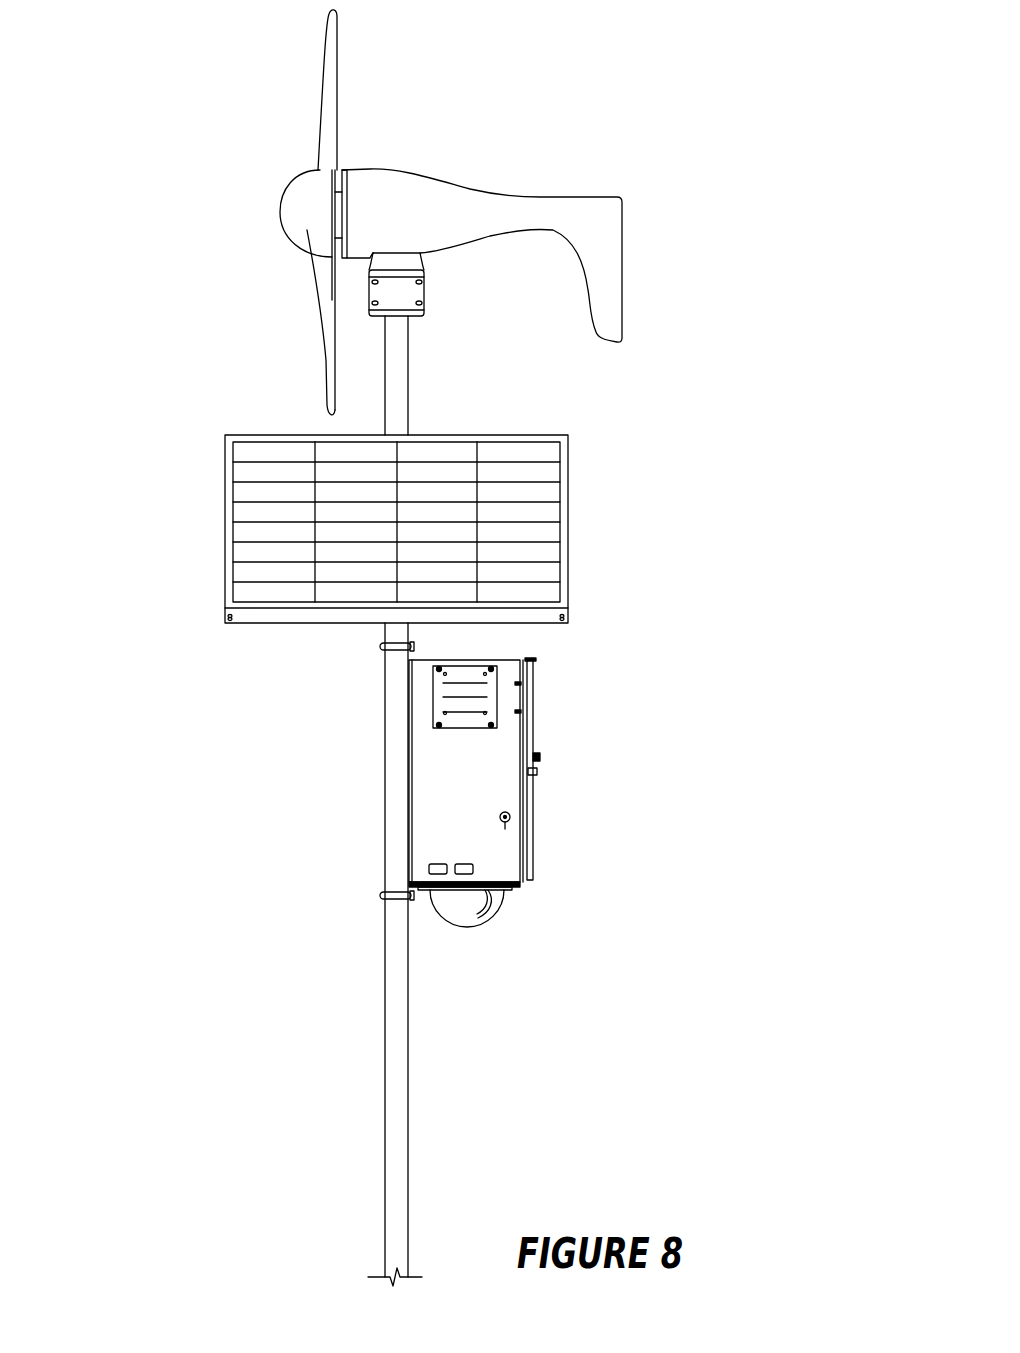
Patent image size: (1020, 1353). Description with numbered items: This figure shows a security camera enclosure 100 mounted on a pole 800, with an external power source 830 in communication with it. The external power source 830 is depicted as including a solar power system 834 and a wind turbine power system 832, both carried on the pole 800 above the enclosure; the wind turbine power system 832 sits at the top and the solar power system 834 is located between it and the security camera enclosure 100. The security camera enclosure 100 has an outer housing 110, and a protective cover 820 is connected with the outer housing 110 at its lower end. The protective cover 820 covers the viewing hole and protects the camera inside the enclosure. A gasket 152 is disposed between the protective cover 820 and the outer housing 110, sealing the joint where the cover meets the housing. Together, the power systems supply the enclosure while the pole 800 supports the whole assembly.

The external power source 830 is at (153, 66).
The wind turbine power system 832 is at (453, 190).
The solar power system 834 is at (568, 435).
The security camera enclosure 100 is at (552, 665).
The outer housing 110 is at (418, 789).
The gasket 152 is at (517, 886).
The protective cover 820 is at (492, 917).
The pole 800 is at (408, 1008).